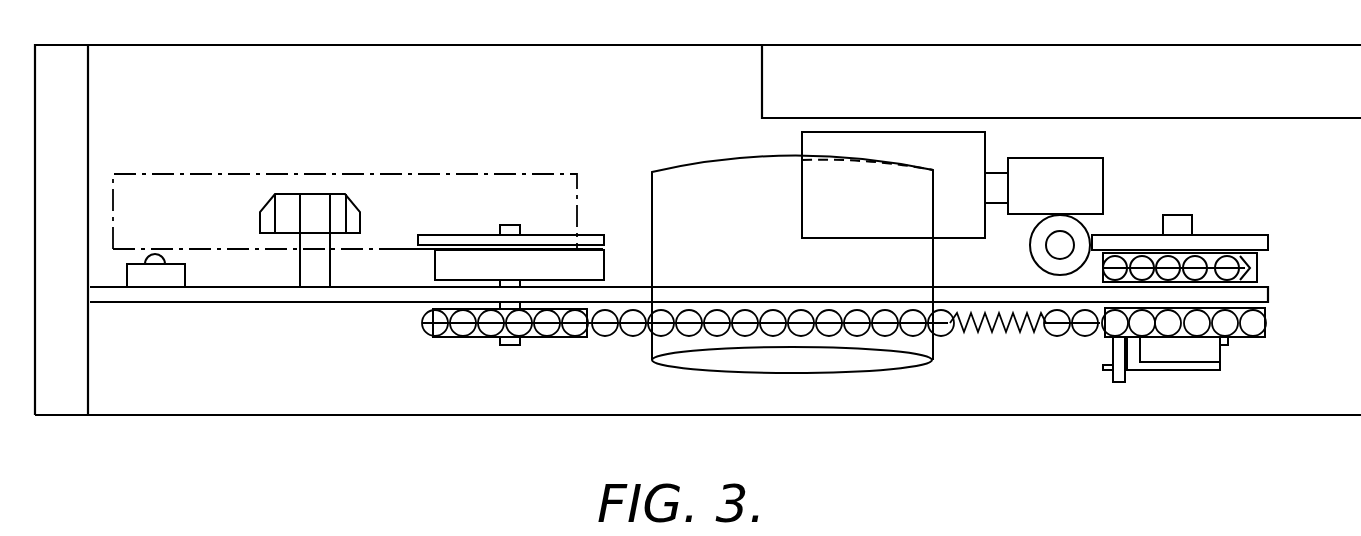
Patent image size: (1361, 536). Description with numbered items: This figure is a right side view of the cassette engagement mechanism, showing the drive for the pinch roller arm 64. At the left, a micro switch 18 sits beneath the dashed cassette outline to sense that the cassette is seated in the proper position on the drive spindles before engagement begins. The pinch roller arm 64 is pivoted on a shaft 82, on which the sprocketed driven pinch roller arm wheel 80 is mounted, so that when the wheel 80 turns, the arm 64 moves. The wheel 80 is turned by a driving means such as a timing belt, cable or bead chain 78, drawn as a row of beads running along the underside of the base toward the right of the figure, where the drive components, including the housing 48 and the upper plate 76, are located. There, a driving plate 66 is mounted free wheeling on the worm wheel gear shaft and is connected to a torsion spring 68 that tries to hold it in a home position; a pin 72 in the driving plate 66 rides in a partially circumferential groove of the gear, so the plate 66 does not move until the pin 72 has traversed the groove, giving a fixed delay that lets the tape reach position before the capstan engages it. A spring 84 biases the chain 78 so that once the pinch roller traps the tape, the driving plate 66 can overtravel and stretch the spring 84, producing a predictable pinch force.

The micro switch 18 is at (177, 288).
The drive motor housing 48 is at (987, 148).
The pinch roller arm 64 is at (588, 233).
The driving plate 66 is at (1230, 342).
The torsion spring 68 is at (1135, 370).
The pin 72 is at (1110, 348).
The upper plate 76 is at (1262, 310).
The bead chain 78 is at (607, 338).
The sprocketed driven pinch roller arm wheel 80 is at (470, 338).
The shaft 82 is at (512, 345).
The spring 84 is at (1012, 330).